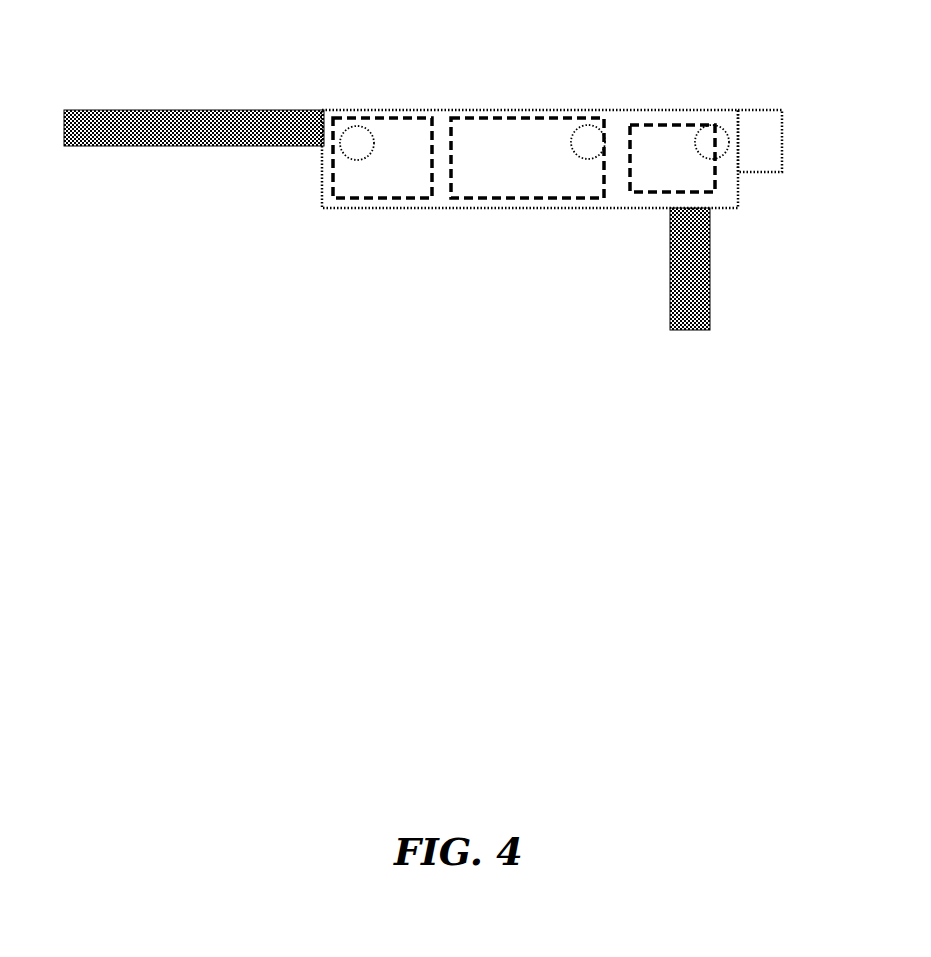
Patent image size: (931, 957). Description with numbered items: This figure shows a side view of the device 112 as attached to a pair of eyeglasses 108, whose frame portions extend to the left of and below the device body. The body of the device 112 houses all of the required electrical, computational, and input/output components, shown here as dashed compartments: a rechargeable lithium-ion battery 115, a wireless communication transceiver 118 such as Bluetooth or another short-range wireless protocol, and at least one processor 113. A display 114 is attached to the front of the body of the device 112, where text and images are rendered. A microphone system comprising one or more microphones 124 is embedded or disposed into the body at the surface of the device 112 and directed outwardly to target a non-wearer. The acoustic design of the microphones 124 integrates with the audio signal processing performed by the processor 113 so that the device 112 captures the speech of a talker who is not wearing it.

The eyeglasses 108 is at (217, 127).
The device 112 is at (453, 110).
The processor 113 is at (715, 192).
The display 114 is at (761, 138).
The rechargeable lithium-ion battery 115 is at (367, 198).
The wireless communication transceiver 118 is at (500, 198).
The microphones 124 is at (712, 142).